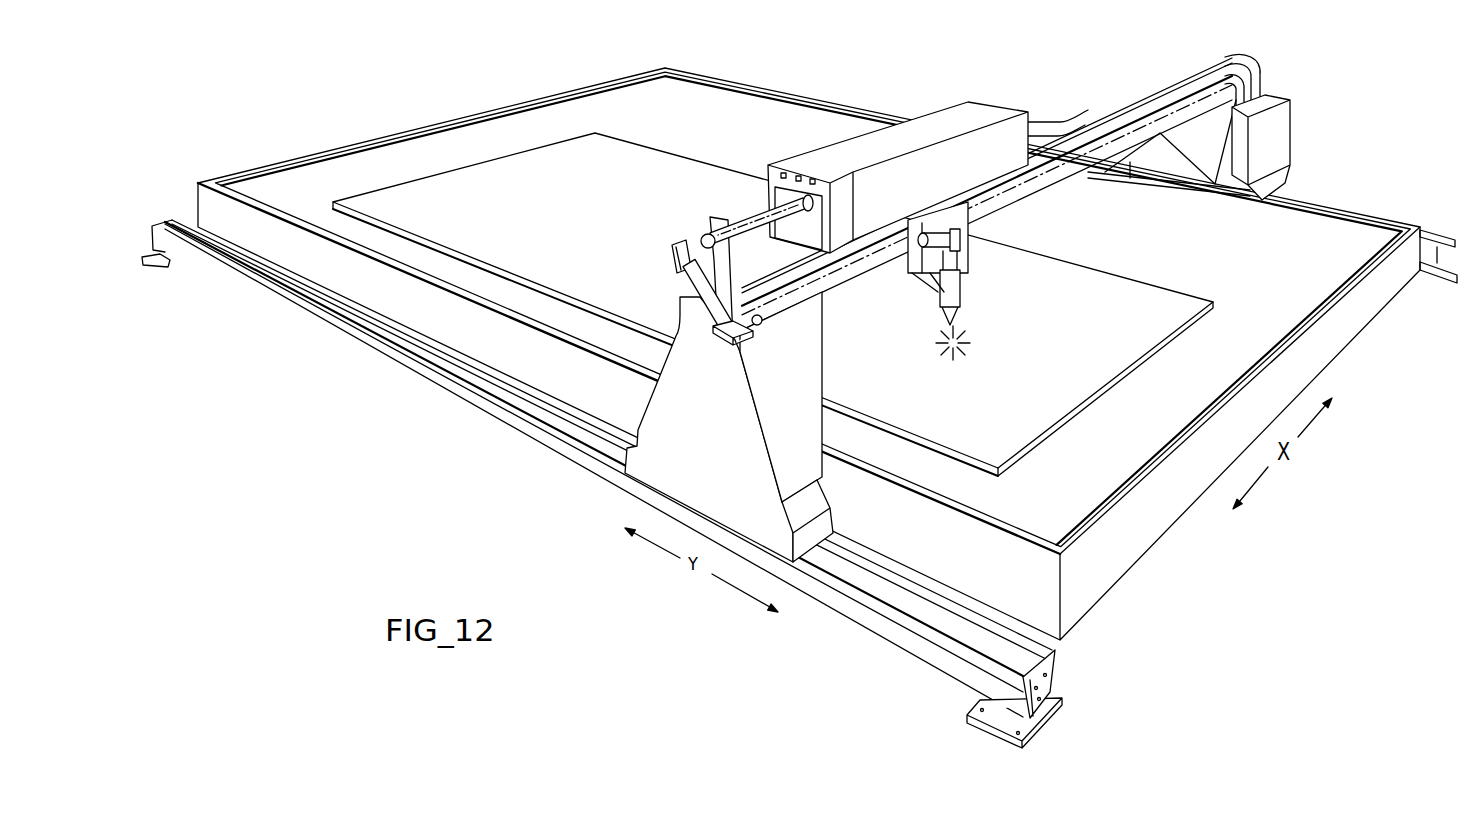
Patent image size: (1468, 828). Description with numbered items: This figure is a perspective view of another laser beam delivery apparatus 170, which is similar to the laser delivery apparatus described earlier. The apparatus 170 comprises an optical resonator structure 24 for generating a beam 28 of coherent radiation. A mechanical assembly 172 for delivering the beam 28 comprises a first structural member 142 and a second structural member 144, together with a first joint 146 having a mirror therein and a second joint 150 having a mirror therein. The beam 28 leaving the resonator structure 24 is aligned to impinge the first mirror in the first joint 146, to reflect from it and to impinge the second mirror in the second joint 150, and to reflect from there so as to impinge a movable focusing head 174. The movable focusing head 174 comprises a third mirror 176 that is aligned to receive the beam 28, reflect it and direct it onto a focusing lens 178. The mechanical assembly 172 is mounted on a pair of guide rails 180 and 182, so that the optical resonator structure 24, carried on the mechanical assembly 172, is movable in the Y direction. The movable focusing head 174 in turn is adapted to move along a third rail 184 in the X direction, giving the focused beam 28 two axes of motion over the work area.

The optical resonator structure 24 is at (943, 112).
The beam of coherent radiation 28 is at (747, 222).
The first structural member 142 is at (703, 237).
The second structural member 144 is at (698, 313).
The first joint 146 is at (674, 255).
The second joint 150 is at (723, 346).
The laser beam delivery apparatus 170 is at (323, 410).
The mechanical assembly 172 is at (1118, 99).
The movable focusing head 174 is at (965, 258).
The third mirror 176 is at (970, 236).
The focusing lens 178 is at (968, 313).
The guide rail 180 is at (1053, 663).
The guide rail 182 is at (1437, 230).
The third rail 184 is at (1089, 172).